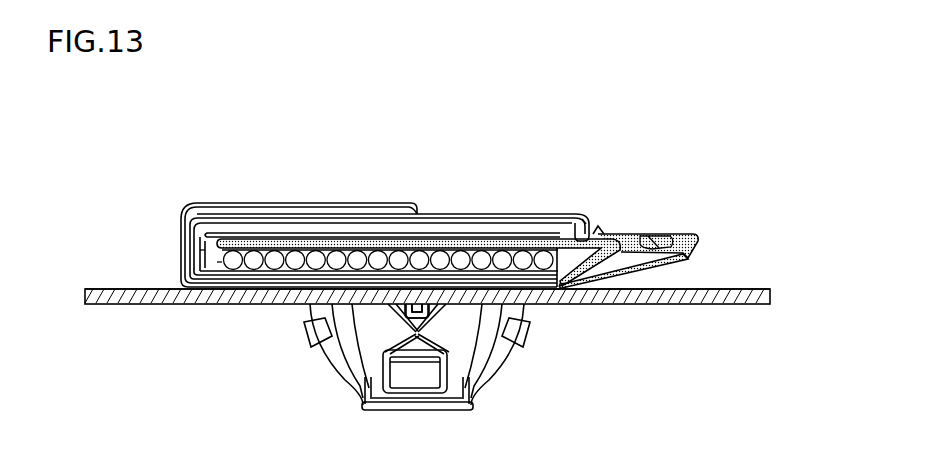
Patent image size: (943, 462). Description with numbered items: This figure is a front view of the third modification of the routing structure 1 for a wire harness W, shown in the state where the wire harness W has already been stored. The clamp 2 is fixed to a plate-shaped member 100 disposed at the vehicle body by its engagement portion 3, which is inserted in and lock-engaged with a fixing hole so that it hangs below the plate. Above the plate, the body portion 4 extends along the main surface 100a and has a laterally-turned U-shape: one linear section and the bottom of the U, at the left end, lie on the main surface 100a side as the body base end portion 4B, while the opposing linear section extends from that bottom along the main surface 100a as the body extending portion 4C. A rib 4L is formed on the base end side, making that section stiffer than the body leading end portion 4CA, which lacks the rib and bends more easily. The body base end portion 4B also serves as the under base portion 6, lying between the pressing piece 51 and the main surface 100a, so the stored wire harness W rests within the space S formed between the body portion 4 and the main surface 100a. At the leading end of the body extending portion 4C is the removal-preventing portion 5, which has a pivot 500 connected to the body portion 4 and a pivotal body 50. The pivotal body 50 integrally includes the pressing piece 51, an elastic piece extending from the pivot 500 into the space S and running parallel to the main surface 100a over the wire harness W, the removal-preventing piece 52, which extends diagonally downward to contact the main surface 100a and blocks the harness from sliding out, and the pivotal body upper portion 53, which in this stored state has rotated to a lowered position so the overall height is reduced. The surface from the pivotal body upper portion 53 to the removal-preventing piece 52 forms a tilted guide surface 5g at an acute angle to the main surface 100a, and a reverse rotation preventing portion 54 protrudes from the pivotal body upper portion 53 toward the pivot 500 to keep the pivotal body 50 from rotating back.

The routing structure 1 is at (593, 106).
The clamp 2 is at (207, 187).
The engagement portion 3 is at (507, 378).
The body portion 4 is at (285, 207).
The rib 4L is at (186, 216).
The body base end portion 4B is at (181, 249).
The body extending portion 4C is at (354, 221).
The body leading end portion 4CA is at (490, 228).
The under base portion 6 is at (281, 273).
The removal-preventing portion 5 is at (668, 268).
The tilted guide surface 5g is at (626, 285).
The pivotal body 50 is at (660, 232).
The pressing piece 51 is at (431, 242).
The removal-preventing piece 52 is at (586, 290).
The pivotal body upper portion 53 is at (688, 235).
The reverse rotation preventing portion 54 is at (606, 222).
The pivot 500 is at (588, 227).
The plate-shaped member 100 is at (120, 308).
The main surface 100a is at (760, 289).
The space S is at (199, 269).
The wire harness W is at (221, 270).